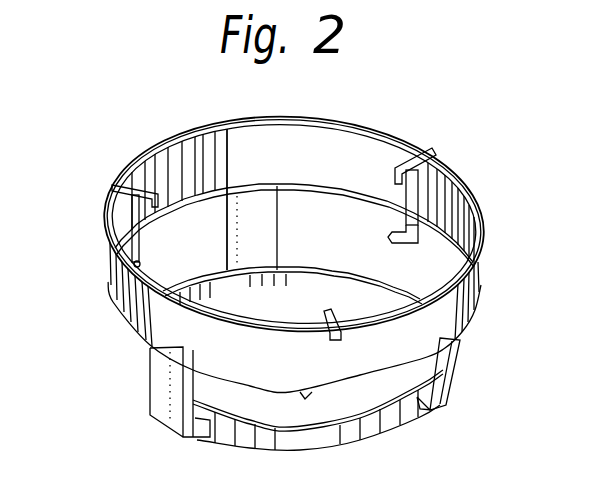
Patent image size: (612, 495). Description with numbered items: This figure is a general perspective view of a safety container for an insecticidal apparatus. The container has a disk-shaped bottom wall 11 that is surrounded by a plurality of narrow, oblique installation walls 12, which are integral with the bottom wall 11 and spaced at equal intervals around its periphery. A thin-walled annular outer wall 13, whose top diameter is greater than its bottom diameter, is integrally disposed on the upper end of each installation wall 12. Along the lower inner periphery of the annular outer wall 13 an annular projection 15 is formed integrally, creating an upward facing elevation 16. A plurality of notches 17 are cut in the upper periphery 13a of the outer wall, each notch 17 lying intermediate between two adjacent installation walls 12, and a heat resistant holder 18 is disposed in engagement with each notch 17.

The bottom wall 11 is at (385, 413).
The installation walls 12 is at (265, 228).
The annular outer wall 13 is at (342, 132).
The upper periphery 13a is at (380, 125).
The annular projection 15 is at (358, 194).
The upward facing elevation 16 is at (353, 190).
The notches 17 is at (118, 185).
The heat resistant holder 18 is at (138, 247).